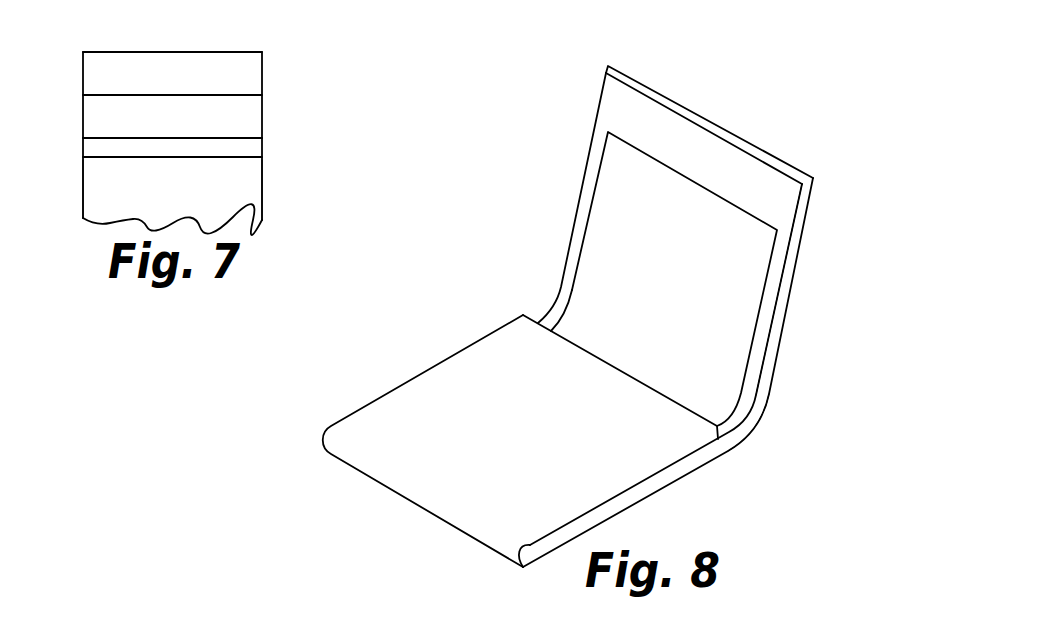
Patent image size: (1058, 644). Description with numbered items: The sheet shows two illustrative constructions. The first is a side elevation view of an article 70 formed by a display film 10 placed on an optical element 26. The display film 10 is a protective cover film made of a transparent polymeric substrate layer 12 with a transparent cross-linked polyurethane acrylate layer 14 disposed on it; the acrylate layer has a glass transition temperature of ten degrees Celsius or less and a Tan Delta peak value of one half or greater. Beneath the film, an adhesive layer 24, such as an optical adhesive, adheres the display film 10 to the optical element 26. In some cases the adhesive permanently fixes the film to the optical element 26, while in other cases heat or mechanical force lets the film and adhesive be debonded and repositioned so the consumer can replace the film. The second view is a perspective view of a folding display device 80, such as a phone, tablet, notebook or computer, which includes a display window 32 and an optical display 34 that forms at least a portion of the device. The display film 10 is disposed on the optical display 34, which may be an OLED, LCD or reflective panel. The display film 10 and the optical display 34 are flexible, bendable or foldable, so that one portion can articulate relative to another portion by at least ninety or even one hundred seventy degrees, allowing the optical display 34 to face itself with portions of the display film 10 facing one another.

In FIG. 7, the article 70 is at (276, 33).
In FIG. 7, the display film 10 is at (75, 53).
In FIG. 8, the display film 10 is at (687, 273).
In FIG. 7, the transparent polymeric substrate layer 12 is at (184, 86).
In FIG. 7, the transparent cross-linked polyurethane acrylate layer 14 is at (184, 131).
In FIG. 7, the adhesive layer 24 is at (252, 147).
In FIG. 7, the optical element 26 is at (252, 182).
In FIG. 8, the folding display device 80 is at (788, 112).
In FIG. 8, the display window 32 is at (733, 347).
In FIG. 8, the optical display 34 is at (746, 290).